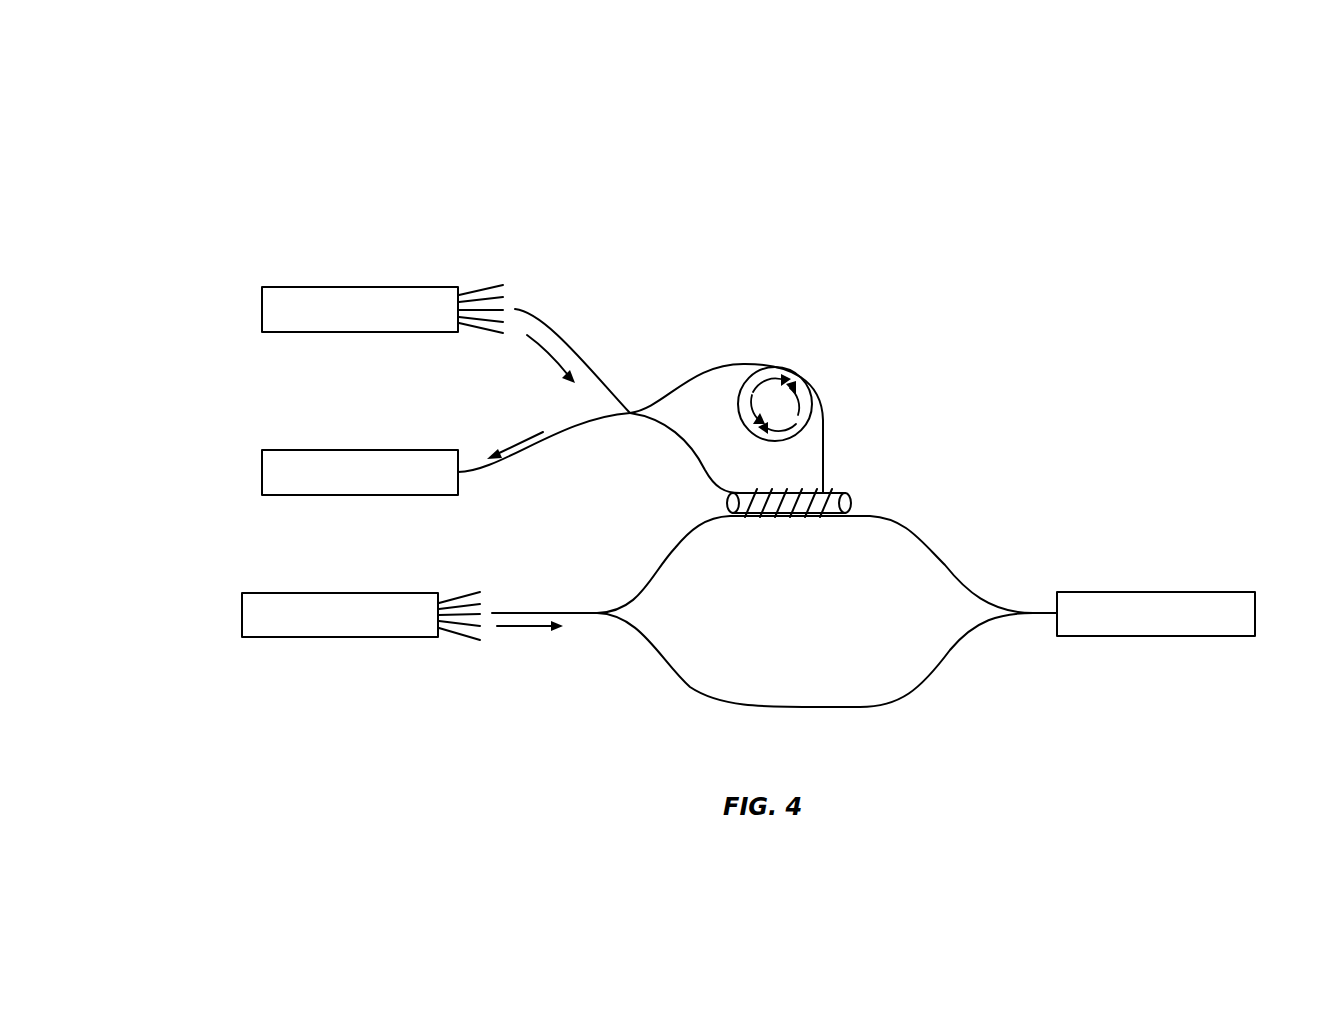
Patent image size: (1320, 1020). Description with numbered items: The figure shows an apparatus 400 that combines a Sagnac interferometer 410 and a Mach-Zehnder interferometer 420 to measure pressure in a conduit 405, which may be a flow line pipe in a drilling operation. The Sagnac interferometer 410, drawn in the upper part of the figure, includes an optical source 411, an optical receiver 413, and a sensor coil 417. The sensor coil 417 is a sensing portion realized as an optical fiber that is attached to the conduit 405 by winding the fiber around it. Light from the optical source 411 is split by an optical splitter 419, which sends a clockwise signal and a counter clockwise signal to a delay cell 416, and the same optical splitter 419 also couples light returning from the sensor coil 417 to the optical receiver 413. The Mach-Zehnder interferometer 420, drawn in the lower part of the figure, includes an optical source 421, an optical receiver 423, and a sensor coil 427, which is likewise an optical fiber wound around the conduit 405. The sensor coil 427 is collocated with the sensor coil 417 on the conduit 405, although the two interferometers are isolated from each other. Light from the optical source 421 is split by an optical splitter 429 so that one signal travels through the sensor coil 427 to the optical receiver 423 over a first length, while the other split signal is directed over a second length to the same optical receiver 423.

The apparatus 400 is at (242, 130).
The Sagnac interferometer 410 is at (270, 385).
The optical source 411 is at (268, 287).
The optical receiver 413 is at (268, 450).
The optical splitter 419 is at (631, 413).
The delay cell 416 is at (808, 380).
The sensor coil 417 is at (802, 493).
The conduit 405 is at (838, 493).
The sensor coil 427 is at (722, 520).
The Mach-Zehnder interferometer 420 is at (446, 690).
The optical source 421 is at (248, 593).
The optical splitter 429 is at (577, 612).
The optical receiver 423 is at (1216, 592).